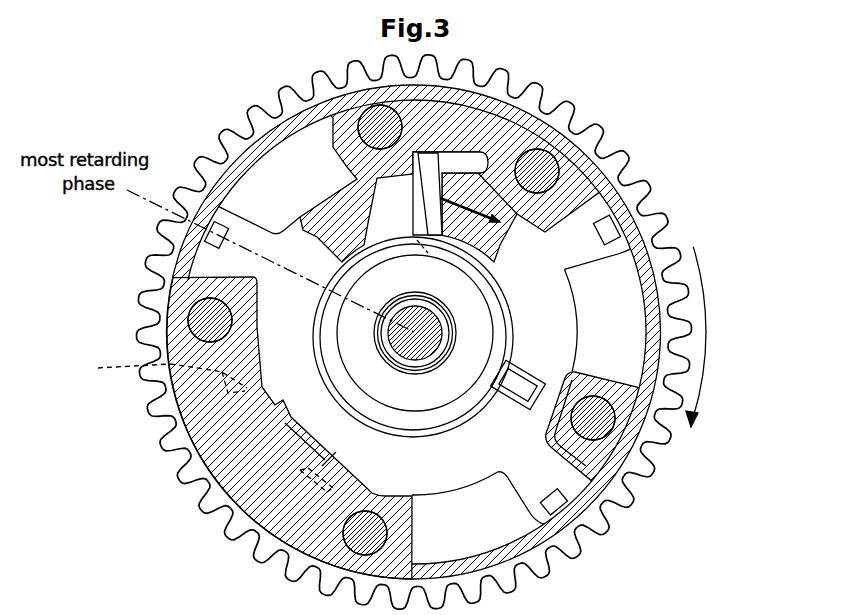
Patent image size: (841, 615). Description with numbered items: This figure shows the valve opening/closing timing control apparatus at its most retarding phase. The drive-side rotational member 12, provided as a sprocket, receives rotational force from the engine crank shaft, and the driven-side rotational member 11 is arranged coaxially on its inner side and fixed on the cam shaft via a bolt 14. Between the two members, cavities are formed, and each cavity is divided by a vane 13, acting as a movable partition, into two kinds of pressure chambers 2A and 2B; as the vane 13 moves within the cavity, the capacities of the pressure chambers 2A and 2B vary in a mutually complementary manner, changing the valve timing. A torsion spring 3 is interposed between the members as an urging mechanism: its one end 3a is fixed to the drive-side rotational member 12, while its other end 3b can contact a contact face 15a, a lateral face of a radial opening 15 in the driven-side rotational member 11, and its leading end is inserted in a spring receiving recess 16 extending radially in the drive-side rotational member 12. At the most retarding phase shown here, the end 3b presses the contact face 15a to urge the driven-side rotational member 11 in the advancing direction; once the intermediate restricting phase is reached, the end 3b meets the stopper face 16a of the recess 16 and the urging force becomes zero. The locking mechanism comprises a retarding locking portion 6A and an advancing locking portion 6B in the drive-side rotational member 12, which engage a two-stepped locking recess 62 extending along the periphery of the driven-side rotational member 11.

The pressure chamber 2A is at (293, 155).
The pressure chamber 2B is at (607, 183).
The torsion spring 3 is at (500, 311).
The one end of the torsion spring 3a is at (527, 402).
The other end of the torsion spring 3b is at (406, 195).
The retarding locking portion 6A is at (197, 424).
The advancing locking portion 6B is at (330, 452).
The driven-side rotational member 11 is at (430, 467).
The drive-side rotational member 12 is at (193, 455).
The vane 13 is at (668, 236).
The bolt 14 is at (395, 337).
The radial opening 15 is at (387, 190).
The contact face 15a is at (470, 160).
The spring receiving recess 16 is at (478, 168).
The stopper face 16a is at (545, 234).
The locking recess 62 is at (200, 510).